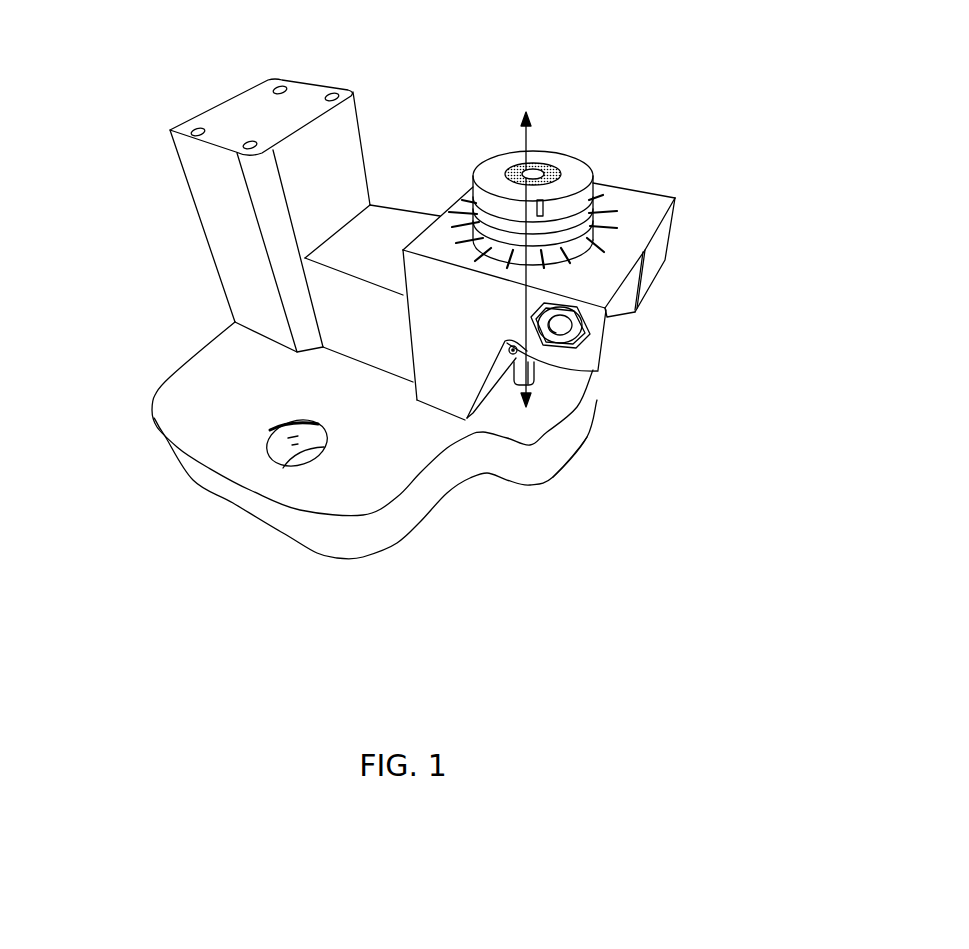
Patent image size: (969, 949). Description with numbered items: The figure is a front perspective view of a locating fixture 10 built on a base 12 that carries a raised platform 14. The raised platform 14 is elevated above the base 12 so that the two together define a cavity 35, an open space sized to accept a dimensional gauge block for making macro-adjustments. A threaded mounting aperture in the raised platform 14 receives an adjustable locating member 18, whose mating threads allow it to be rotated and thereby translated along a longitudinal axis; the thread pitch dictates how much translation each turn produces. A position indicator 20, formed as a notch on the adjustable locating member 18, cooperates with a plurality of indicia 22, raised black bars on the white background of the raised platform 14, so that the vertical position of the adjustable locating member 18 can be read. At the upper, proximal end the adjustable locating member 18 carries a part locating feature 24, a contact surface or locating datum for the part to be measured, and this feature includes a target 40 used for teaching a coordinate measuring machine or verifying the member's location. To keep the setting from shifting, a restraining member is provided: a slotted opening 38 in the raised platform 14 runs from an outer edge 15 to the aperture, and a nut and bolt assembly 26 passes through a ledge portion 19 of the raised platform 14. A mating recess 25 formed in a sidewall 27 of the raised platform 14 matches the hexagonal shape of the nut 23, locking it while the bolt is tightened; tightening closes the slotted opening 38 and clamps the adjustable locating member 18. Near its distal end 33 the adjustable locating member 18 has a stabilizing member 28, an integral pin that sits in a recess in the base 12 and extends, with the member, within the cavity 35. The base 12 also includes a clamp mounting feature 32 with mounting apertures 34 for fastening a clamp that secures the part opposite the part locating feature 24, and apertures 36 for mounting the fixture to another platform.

The locating fixture 10 is at (746, 163).
The base 12 is at (173, 398).
The raised platform 14 is at (655, 223).
The outer edge 15 is at (623, 317).
The adjustable locating member 18 is at (470, 203).
The ledge portion 19 is at (658, 195).
The position indicator 20 is at (541, 207).
The indicia 22 is at (443, 243).
The nut 23 is at (587, 345).
The part locating feature 24 is at (573, 165).
The mating recess 25 is at (530, 315).
The nut and bolt assembly 26 is at (591, 333).
The sidewall 27 is at (420, 397).
The stabilizing member 28 is at (529, 385).
The clamp mounting feature 32 is at (257, 112).
The distal end 33 is at (551, 373).
The mounting apertures 34 is at (170, 133).
The cavity 35 is at (586, 400).
The apertures 36 is at (260, 450).
The slotted opening 38 is at (646, 270).
The target 40 is at (542, 160).